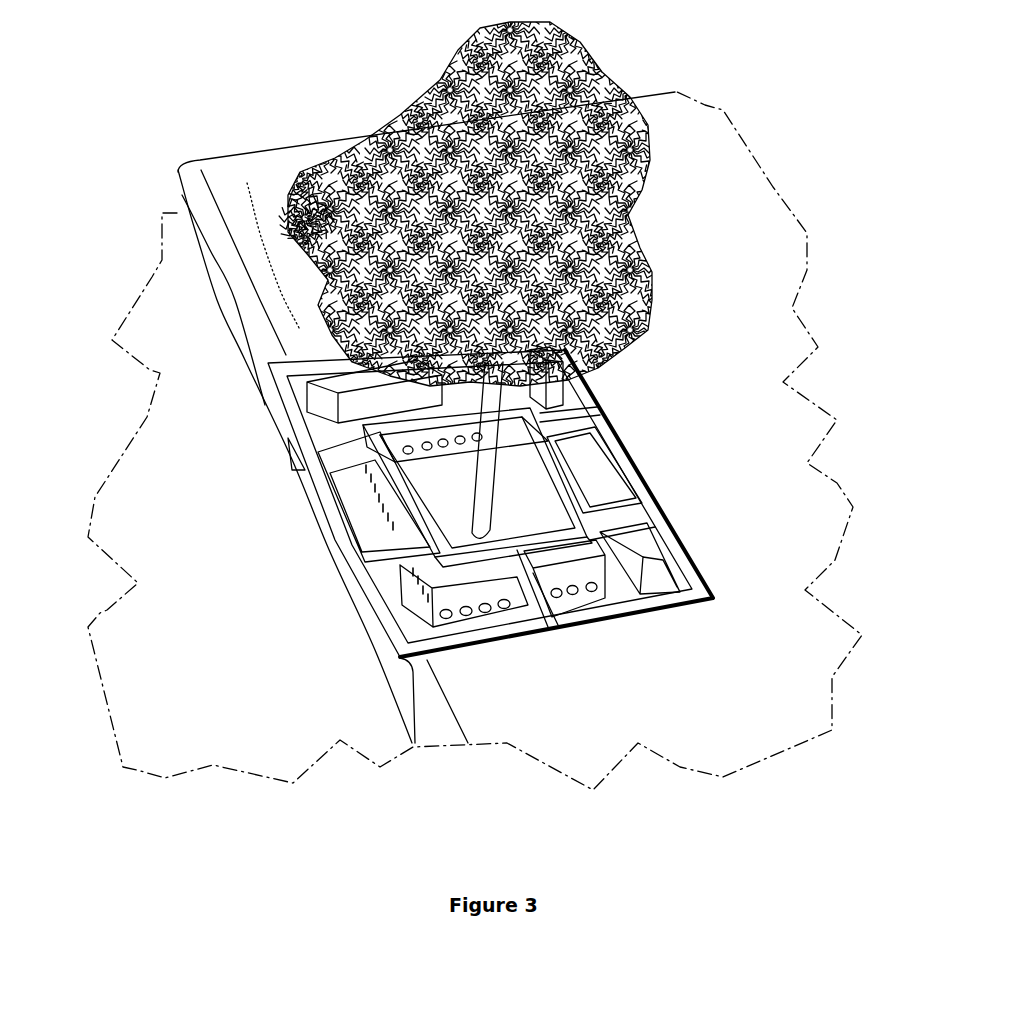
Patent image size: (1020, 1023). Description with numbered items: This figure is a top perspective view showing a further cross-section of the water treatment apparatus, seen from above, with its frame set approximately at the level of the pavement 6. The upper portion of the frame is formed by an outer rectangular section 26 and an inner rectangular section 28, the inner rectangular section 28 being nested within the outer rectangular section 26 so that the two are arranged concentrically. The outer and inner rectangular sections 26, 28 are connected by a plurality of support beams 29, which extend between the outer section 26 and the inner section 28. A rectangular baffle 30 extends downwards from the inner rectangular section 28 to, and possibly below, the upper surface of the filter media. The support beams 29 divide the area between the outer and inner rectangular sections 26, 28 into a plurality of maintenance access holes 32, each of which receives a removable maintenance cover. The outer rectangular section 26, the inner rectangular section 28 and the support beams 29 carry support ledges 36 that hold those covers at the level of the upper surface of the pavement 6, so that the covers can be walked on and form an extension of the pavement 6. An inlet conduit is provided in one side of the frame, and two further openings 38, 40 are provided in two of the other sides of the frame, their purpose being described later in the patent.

The pavement 6 is at (740, 646).
The outer rectangular section 26 is at (593, 375).
The inner rectangular section 28 is at (363, 473).
The support beams 29 is at (562, 617).
The rectangular baffle 30 is at (593, 570).
The maintenance access holes 32 is at (362, 508).
The support ledges 36 is at (662, 543).
The opening 38 is at (360, 393).
The opening 40 is at (595, 483).